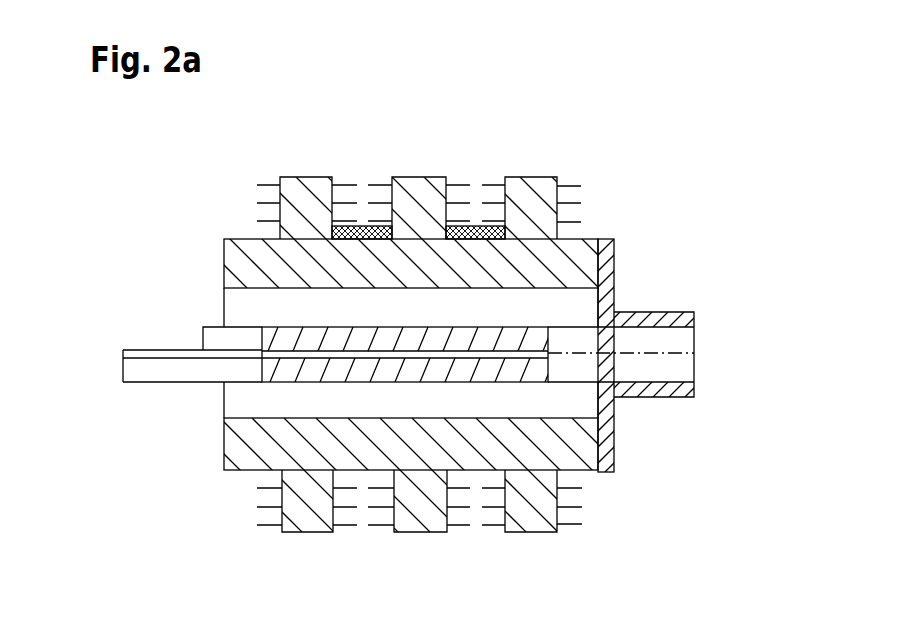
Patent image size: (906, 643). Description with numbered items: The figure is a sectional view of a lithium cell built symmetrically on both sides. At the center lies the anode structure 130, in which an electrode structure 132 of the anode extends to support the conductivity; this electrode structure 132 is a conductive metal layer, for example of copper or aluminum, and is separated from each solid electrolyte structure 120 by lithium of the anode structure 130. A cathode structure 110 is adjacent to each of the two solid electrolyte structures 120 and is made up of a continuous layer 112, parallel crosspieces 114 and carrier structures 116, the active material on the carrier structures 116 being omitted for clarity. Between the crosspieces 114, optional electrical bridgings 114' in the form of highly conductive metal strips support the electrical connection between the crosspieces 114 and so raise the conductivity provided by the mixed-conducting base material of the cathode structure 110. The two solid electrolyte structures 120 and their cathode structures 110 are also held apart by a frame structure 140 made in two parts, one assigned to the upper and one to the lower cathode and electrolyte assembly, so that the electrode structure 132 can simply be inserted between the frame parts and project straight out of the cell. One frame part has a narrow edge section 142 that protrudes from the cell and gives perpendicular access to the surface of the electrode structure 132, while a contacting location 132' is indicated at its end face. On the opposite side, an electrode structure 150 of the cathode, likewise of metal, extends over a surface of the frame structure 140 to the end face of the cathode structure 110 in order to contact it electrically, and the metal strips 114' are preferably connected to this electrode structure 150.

The cathode structure 110 is at (622, 177).
The continuous layer 112 is at (251, 250).
The crosspieces 114 is at (399, 354).
The electrical bridgings 114' is at (420, 170).
The carrier structures 116 is at (258, 185).
The solid electrolyte structure 120 is at (242, 290).
The anode structure 130 is at (523, 342).
The electrode structure of the anode 132 is at (296, 333).
The contacting location 132' is at (149, 348).
The frame structure 140 is at (137, 370).
The narrow edge section 142 is at (215, 327).
The electrode structure of the cathode 150 is at (672, 313).